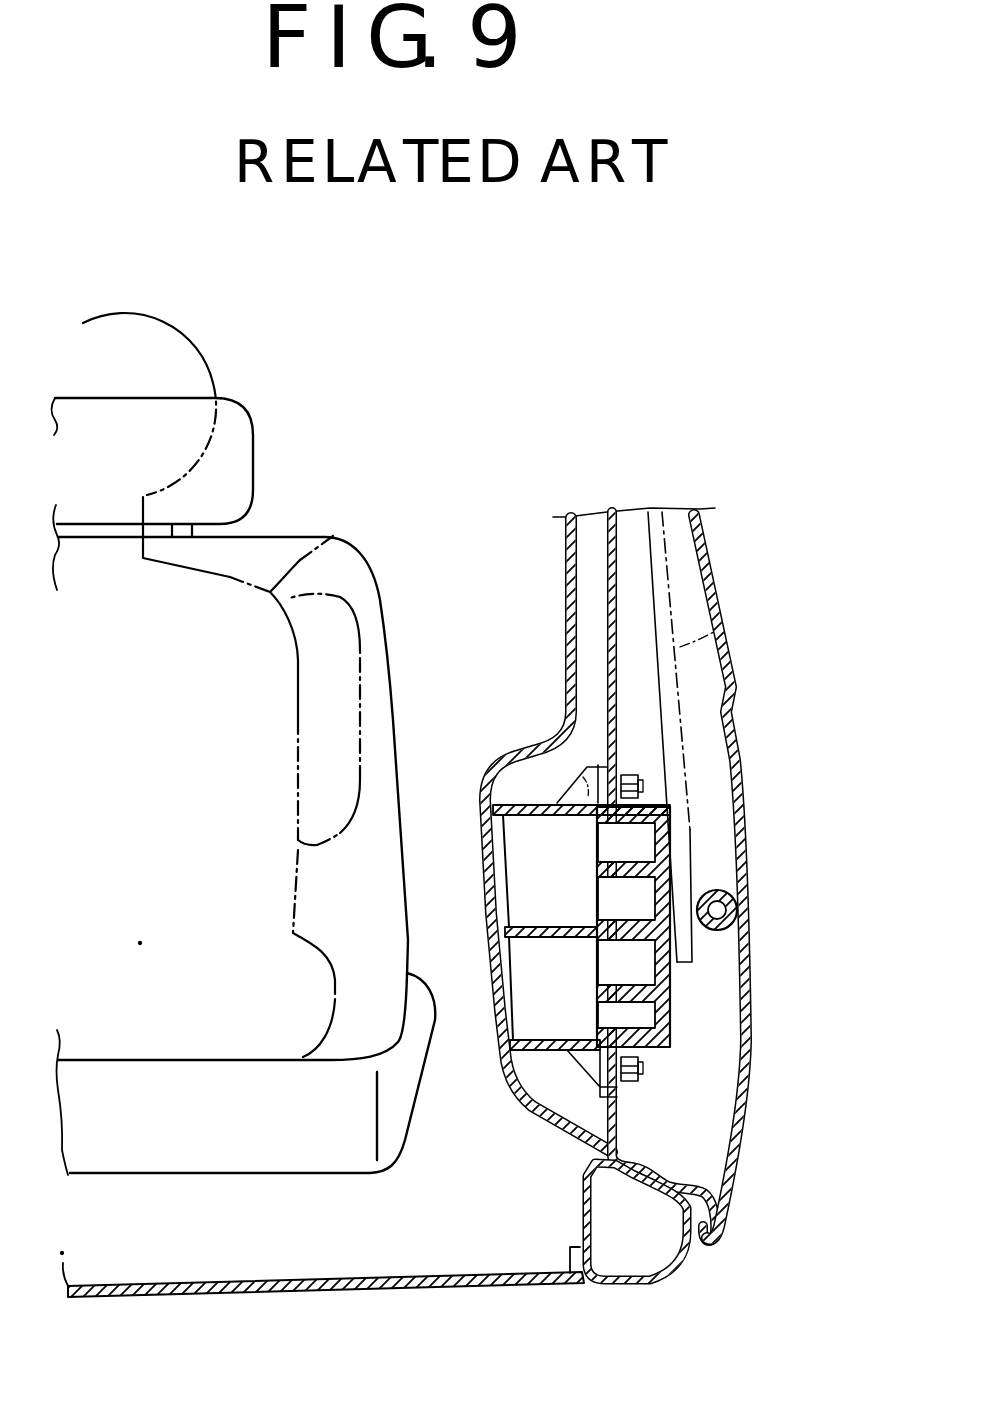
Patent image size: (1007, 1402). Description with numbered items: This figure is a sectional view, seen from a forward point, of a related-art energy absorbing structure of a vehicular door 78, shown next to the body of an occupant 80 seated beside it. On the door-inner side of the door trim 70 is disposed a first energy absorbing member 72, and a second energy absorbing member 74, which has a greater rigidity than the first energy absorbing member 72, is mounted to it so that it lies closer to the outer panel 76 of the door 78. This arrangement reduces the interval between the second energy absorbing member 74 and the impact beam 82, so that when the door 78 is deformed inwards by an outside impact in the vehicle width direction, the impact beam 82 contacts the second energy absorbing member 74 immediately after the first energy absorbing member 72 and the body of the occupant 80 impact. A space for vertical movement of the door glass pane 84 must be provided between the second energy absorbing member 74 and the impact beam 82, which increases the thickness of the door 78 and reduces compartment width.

The door trim 70 is at (567, 668).
The first energy absorbing member 72 is at (540, 805).
The second energy absorbing member 74 is at (673, 840).
The outer panel 76 is at (737, 660).
The door 78 is at (727, 545).
The occupant 80 is at (333, 535).
The impact beam 82 is at (718, 932).
The door glass pane 84 is at (727, 623).